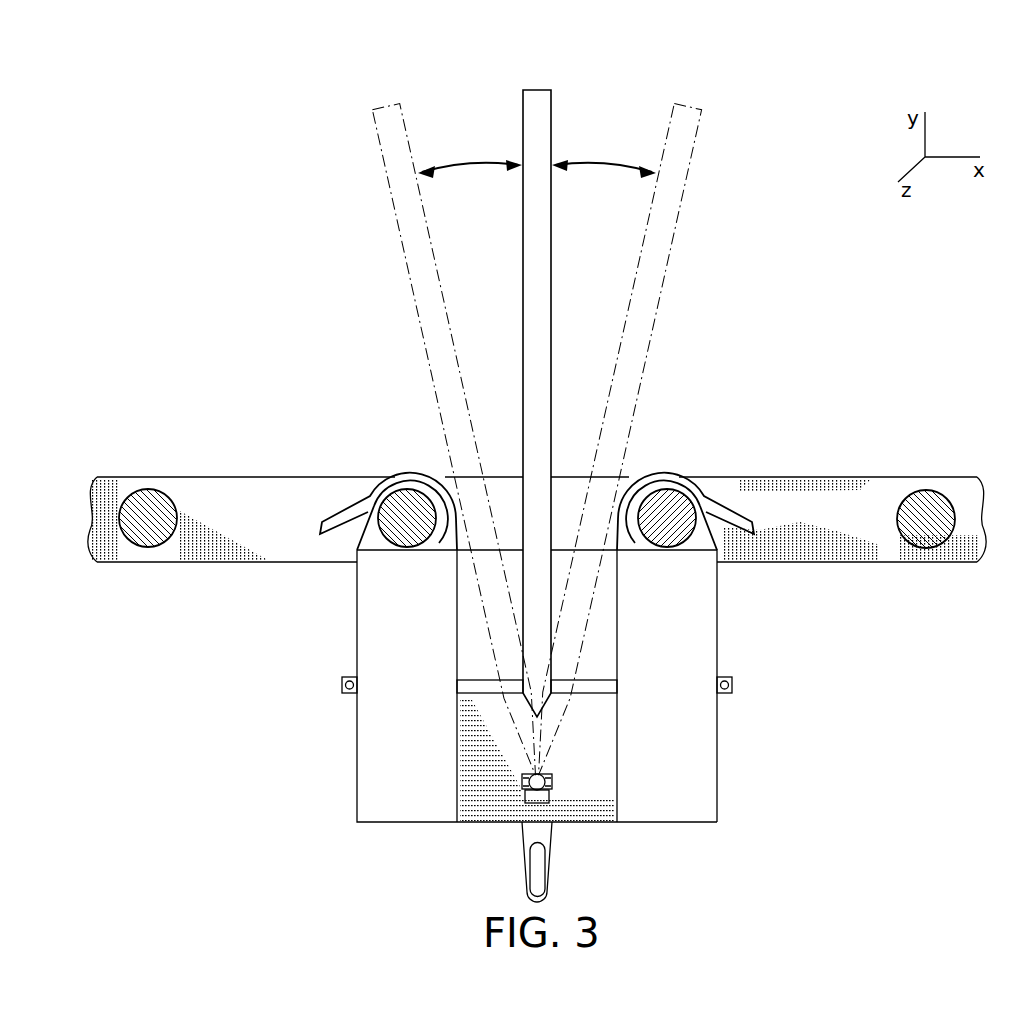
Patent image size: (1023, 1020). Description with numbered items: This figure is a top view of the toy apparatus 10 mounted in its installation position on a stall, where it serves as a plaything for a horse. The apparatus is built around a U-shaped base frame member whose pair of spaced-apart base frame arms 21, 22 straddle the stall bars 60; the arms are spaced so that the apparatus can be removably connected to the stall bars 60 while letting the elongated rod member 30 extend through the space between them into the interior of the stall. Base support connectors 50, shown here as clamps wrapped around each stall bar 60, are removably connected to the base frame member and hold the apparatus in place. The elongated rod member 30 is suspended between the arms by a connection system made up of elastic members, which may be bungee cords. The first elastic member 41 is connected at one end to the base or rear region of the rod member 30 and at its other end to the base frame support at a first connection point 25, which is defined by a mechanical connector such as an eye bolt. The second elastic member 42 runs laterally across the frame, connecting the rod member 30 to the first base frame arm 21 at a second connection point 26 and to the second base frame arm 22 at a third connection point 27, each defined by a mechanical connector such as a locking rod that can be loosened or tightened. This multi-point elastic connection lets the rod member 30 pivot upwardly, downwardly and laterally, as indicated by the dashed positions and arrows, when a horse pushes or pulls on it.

The toy apparatus 10 is at (770, 662).
The first base frame arm 21 is at (370, 755).
The second base frame arm 22 is at (690, 755).
The first connection point 25 is at (533, 867).
The second connection point 26 is at (343, 692).
The third connection point 27 is at (733, 693).
The elongated rod member 30 is at (551, 110).
The first elastic member 41 is at (522, 838).
The second elastic member 42 is at (477, 690).
The base support connector 50 is at (400, 475).
The stall bar 60 is at (862, 503).